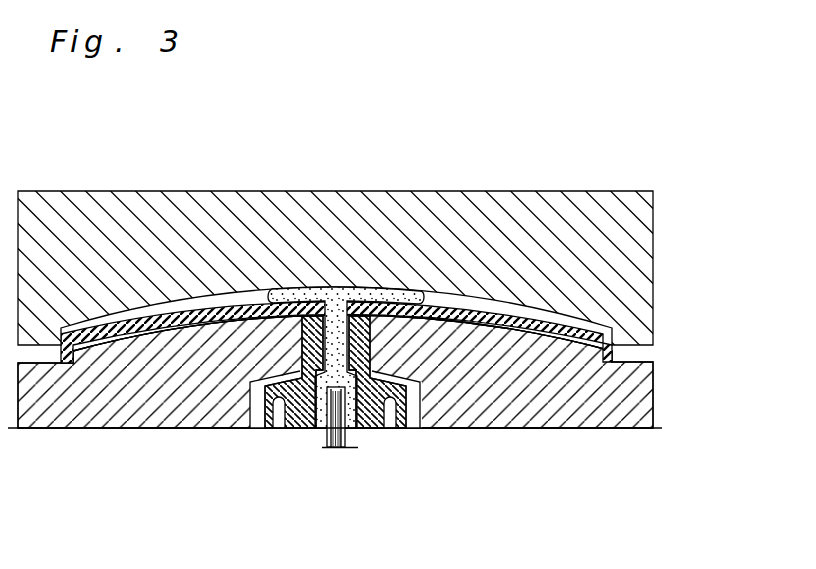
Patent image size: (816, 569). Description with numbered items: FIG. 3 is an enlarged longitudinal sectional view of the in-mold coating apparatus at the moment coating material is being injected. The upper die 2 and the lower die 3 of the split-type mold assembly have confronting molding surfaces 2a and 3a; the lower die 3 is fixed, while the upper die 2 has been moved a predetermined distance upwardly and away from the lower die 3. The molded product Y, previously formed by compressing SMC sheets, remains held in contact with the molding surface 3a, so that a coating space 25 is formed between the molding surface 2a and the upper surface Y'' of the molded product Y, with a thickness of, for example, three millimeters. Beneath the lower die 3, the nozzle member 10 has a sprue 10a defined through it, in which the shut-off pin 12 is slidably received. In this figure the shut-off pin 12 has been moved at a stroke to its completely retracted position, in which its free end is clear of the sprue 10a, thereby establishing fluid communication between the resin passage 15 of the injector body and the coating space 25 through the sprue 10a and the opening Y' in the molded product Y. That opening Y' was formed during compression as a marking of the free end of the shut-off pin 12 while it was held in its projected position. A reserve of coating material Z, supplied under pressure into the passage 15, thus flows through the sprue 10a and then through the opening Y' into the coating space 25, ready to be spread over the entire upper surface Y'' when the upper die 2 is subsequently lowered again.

The upper die 2 is at (565, 208).
The molding surface 2a is at (553, 310).
The lower die 3 is at (543, 397).
The molding surface 3a is at (553, 338).
The nozzle member 10 is at (367, 412).
The sprue 10a is at (322, 348).
The shut-off pin 12 is at (333, 443).
The resin passage 15 is at (322, 440).
The coating space 25 is at (458, 300).
The molded product Y is at (215, 209).
The opening Y' is at (314, 202).
The upper surface Y'' is at (661, 318).
The coating material Z is at (346, 292).